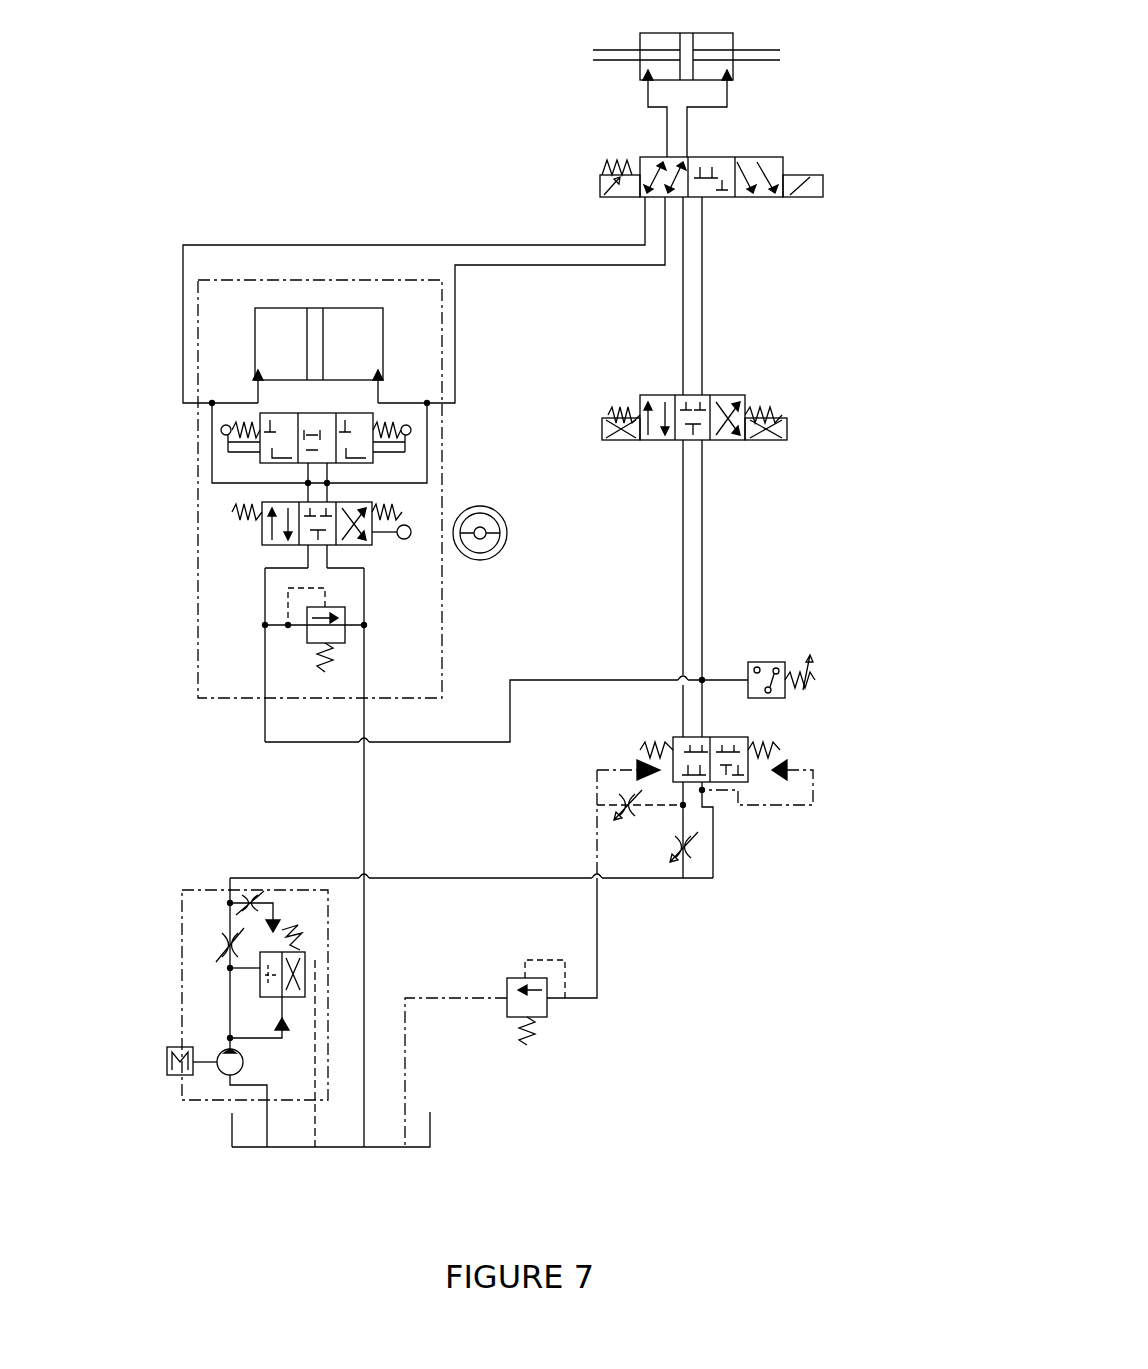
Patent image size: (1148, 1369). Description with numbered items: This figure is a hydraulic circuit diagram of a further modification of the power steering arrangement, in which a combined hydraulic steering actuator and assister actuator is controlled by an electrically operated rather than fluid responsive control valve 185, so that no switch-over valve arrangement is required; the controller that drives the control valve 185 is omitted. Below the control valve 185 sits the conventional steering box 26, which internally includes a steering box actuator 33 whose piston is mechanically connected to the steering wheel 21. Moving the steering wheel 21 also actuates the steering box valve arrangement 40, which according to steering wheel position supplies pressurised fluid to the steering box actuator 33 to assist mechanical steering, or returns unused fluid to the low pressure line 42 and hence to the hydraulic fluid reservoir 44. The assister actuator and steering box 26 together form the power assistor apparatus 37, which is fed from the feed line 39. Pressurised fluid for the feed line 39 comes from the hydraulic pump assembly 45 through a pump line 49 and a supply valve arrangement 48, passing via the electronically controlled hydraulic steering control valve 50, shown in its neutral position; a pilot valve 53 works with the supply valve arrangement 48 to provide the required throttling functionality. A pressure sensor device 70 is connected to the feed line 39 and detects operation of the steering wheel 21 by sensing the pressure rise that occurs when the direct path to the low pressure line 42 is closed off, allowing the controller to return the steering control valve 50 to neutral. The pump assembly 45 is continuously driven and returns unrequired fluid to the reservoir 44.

The electrically operated control valve 185 is at (788, 150).
The steering box actuator 33 is at (385, 328).
The steering box 26 is at (442, 465).
The steering box valve arrangement 40 is at (240, 571).
The power assistor apparatus 37 is at (443, 610).
The steering wheel 21 is at (497, 512).
The electronically controlled hydraulic steering control valve 50 is at (748, 383).
The feed line 39 is at (305, 745).
The low pressure line 42 is at (364, 795).
The pressure sensor device 70 is at (758, 662).
The supply valve arrangement 48 is at (758, 838).
The pump line 49 is at (468, 878).
The pilot valve 53 is at (548, 1020).
The hydraulic fluid reservoir 44 is at (432, 1140).
The hydraulic pump assembly 45 is at (163, 890).